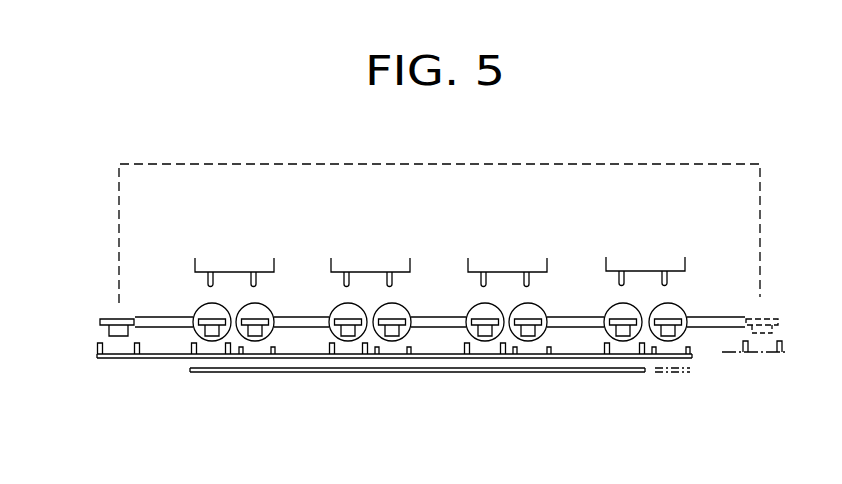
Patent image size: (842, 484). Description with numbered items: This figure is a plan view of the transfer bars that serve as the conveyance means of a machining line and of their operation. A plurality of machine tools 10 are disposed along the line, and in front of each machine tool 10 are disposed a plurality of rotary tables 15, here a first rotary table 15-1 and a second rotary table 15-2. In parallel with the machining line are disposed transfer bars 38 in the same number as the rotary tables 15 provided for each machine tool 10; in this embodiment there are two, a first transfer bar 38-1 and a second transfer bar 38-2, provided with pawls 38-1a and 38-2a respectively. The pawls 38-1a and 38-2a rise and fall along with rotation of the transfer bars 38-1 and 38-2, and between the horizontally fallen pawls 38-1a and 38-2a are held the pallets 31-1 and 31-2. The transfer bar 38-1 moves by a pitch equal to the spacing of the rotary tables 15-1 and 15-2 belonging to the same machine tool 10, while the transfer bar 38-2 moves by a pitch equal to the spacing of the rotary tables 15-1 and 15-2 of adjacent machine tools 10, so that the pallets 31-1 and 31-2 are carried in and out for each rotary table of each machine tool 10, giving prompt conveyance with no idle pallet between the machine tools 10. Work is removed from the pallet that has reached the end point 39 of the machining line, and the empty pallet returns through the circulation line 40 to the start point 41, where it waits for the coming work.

The circulation line 40 is at (598, 164).
The machine tool 10 is at (238, 248).
The rotary table 15 is at (216, 320).
The first rotary table 15-1 is at (176, 320).
The second rotary table 15-2 is at (273, 323).
The start point 41 is at (113, 316).
The end point 39 is at (770, 317).
The first pallet 31-1 is at (200, 337).
The second pallet 31-2 is at (254, 338).
The transfer bar 38 is at (394, 402).
The first transfer bar 38-1 is at (394, 402).
The second transfer bar 38-2 is at (440, 391).
The pawl of first transfer bar 38-1a is at (194, 356).
The pawl of second transfer bar 38-2a is at (380, 373).